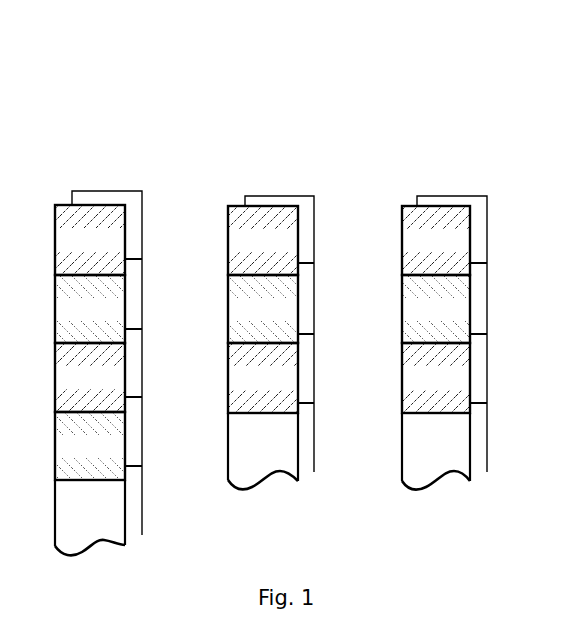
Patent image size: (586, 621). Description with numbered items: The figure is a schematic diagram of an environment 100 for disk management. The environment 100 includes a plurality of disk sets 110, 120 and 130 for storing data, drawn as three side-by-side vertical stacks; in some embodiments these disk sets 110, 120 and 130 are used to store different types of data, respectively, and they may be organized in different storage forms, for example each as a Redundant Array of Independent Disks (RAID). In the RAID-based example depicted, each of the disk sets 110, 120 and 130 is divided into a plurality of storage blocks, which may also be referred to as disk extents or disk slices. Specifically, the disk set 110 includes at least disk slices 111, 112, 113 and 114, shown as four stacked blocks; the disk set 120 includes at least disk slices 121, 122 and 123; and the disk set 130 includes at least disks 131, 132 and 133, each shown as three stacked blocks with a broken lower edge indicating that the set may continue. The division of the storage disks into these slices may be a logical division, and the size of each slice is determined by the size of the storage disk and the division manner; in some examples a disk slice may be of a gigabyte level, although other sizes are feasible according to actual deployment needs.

The environment 100 is at (132, 68).
The disk set 110 is at (125, 205).
The disk slice 111 is at (90, 240).
The disk slice 112 is at (90, 309).
The disk slice 113 is at (90, 377).
The disk slice 114 is at (90, 446).
The disk set 120 is at (298, 206).
The disk slice 121 is at (263, 240).
The disk slice 122 is at (263, 309).
The disk slice 123 is at (263, 378).
The disk set 130 is at (470, 206).
The disk 131 is at (436, 240).
The disk 132 is at (436, 309).
The disk 133 is at (436, 378).